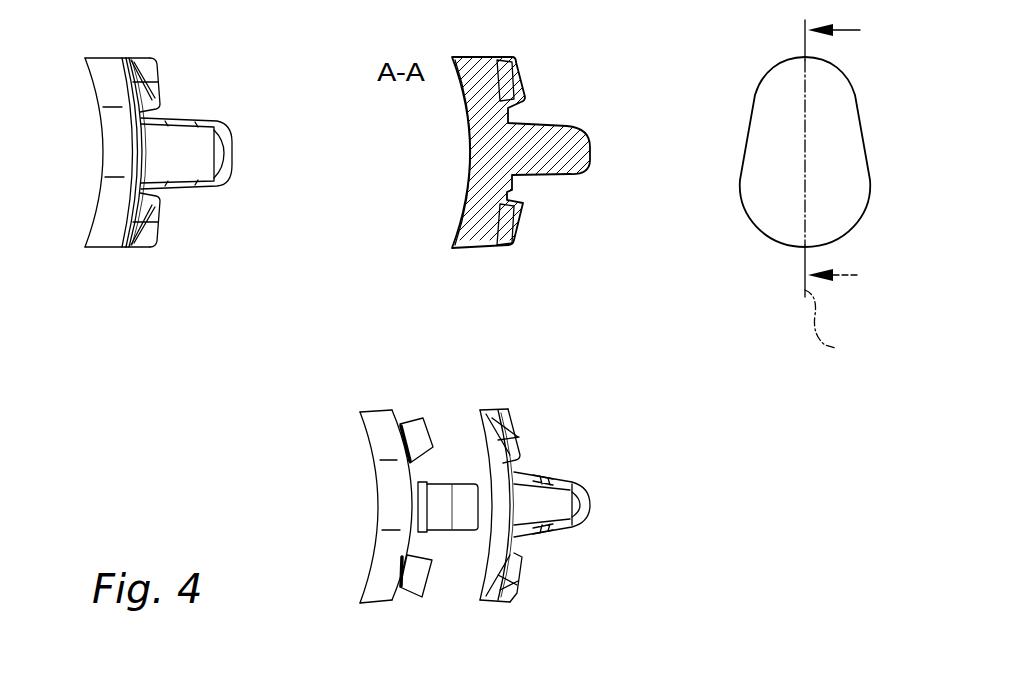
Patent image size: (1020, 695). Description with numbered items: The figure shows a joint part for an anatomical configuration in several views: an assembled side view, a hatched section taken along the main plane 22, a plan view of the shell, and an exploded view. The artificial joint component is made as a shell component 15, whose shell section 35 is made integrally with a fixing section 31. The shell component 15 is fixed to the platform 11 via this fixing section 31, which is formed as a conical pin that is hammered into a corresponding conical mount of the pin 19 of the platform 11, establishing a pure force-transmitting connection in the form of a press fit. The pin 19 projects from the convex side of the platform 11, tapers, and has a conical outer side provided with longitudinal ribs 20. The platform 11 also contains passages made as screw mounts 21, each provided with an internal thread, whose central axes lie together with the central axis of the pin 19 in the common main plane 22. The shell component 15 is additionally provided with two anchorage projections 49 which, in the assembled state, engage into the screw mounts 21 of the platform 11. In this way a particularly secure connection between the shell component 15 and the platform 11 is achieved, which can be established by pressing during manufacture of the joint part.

The platform 11 is at (140, 256).
The shell component 15 is at (98, 252).
The pin 19 is at (580, 157).
The longitudinal ribs 20 is at (543, 480).
The screw mount 21 is at (524, 83).
The main plane 22 is at (835, 325).
The fixing section 31 is at (455, 497).
The shell section 35 is at (488, 154).
The anchorage projection 49 is at (510, 57).